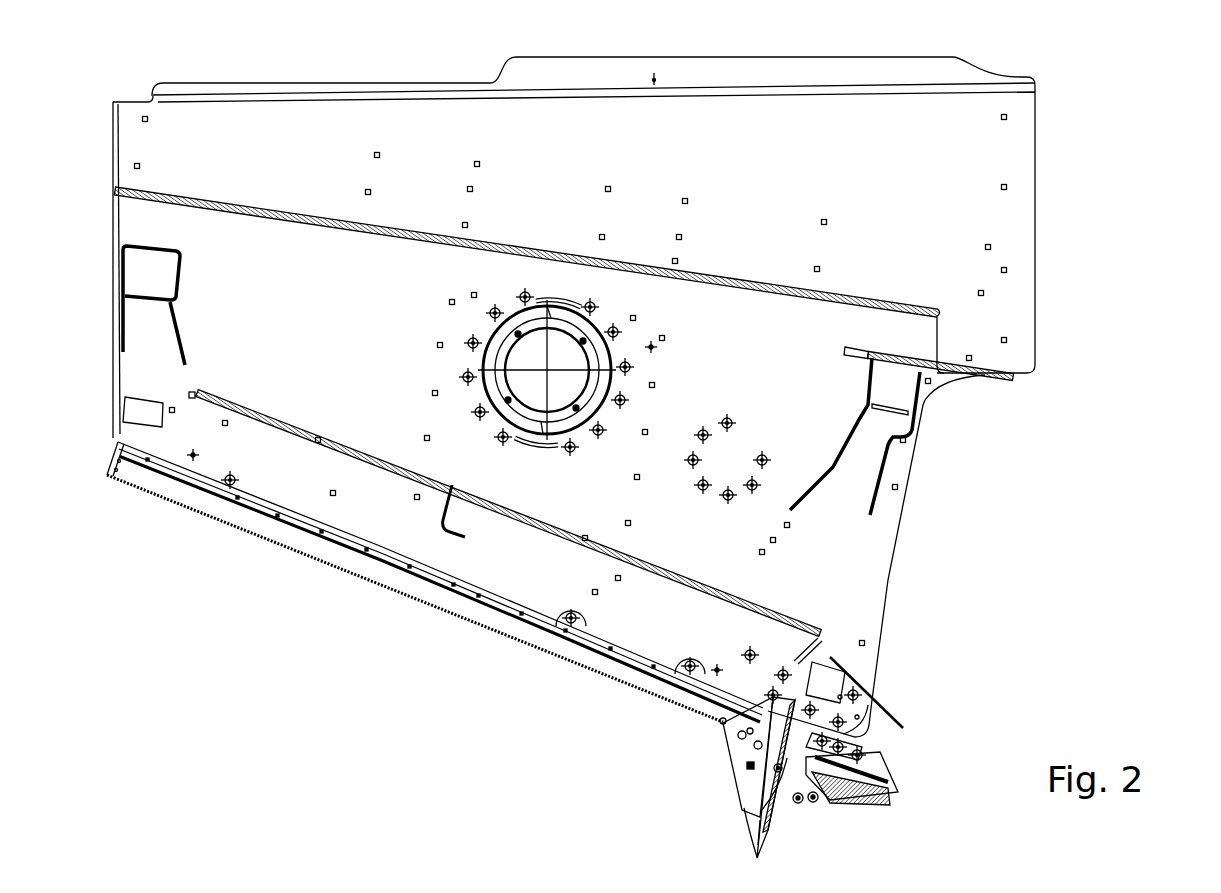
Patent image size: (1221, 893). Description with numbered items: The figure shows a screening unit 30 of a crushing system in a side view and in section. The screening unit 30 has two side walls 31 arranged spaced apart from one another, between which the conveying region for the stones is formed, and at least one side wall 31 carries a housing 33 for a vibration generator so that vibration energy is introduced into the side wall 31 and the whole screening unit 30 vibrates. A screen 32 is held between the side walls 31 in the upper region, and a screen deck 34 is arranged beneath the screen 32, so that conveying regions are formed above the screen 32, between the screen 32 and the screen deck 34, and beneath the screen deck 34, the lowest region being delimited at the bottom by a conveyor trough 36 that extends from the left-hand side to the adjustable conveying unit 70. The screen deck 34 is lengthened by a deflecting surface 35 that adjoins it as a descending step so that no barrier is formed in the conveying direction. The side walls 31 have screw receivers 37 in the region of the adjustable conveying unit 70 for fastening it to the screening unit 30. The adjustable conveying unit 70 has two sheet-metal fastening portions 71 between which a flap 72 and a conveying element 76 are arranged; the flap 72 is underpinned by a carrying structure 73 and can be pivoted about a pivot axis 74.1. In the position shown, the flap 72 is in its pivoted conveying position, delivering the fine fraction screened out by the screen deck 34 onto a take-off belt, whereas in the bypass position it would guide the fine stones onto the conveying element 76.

The screening unit 30 is at (1060, 246).
The side wall 31 is at (1010, 207).
The screen 32 is at (238, 192).
The housing 33 is at (517, 356).
The screen deck 34 is at (255, 405).
The deflecting surface 35 is at (886, 705).
The conveyor trough 36 is at (297, 553).
The screw receiver 37 is at (832, 716).
The adjustable conveying unit 70 is at (716, 760).
The fastening portion 71 is at (863, 744).
The flap 72 is at (755, 813).
The carrying structure 73 is at (800, 833).
The pivot axis 74.1 is at (774, 770).
The conveying element 76 is at (890, 800).